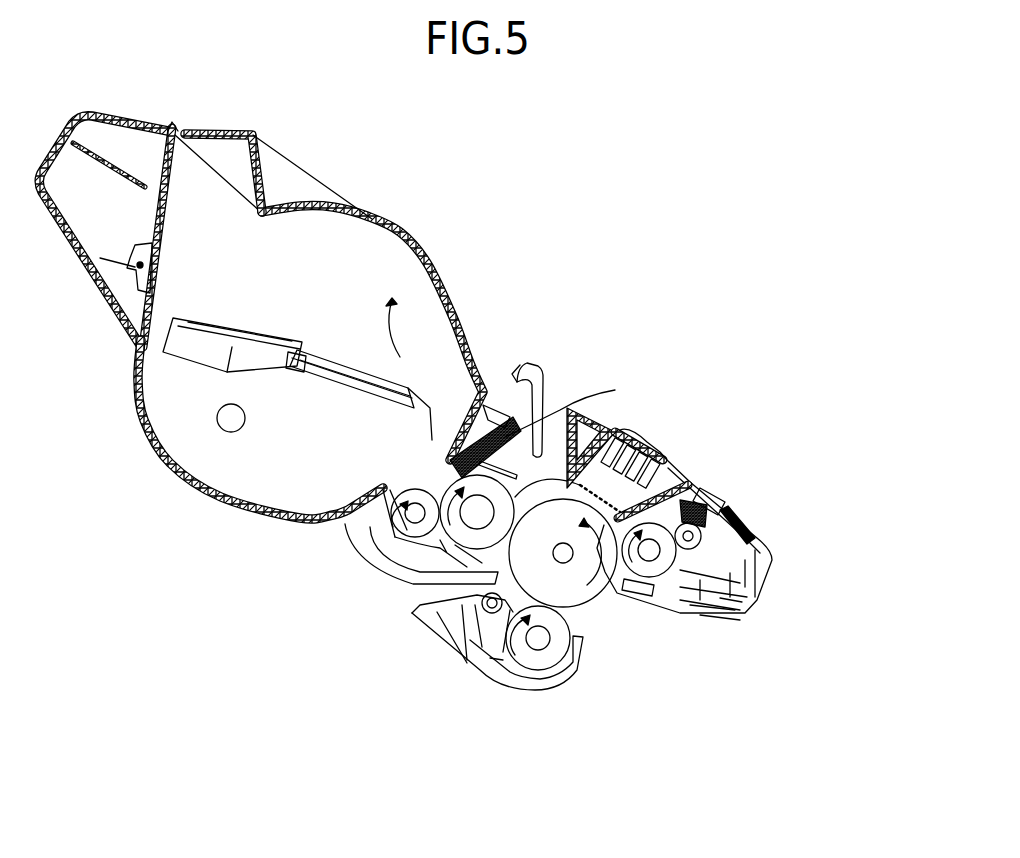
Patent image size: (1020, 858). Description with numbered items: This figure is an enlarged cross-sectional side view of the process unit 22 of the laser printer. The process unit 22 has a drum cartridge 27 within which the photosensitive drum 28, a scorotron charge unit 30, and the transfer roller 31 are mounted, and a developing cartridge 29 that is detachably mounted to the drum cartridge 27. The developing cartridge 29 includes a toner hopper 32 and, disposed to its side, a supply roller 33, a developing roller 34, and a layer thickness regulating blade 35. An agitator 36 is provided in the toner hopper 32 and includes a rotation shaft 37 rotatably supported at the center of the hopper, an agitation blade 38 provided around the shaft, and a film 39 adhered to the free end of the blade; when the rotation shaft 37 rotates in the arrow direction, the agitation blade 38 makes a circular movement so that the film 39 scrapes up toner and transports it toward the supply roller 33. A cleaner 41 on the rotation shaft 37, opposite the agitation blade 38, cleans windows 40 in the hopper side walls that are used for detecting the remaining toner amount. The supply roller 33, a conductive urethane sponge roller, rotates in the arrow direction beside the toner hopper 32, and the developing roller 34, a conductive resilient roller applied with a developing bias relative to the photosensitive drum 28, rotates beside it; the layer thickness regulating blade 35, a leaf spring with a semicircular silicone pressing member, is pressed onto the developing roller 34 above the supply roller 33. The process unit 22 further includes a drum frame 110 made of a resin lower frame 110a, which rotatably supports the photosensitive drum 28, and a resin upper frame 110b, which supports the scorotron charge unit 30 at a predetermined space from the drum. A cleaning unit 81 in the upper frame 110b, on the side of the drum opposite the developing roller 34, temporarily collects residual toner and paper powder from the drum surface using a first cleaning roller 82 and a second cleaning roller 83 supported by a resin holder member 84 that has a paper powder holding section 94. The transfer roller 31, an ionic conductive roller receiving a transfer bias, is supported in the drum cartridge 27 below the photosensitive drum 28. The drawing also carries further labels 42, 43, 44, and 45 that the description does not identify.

The process unit 22 is at (262, 717).
The drum cartridge 27 is at (774, 598).
The photosensitive drum 28 is at (605, 602).
The developing cartridge 29 is at (440, 260).
The scorotron charge unit 30 is at (667, 467).
The transfer roller 31 is at (490, 665).
The toner hopper 32 is at (290, 205).
The supply roller 33 is at (347, 537).
The developing roller 34 is at (593, 408).
The layer thickness regulating blade 35 is at (478, 460).
The agitator 36 is at (348, 362).
The rotation shaft 37 is at (285, 366).
The agitation blade 38 is at (300, 372).
The film 39 is at (405, 416).
The cleaning windows 40 is at (236, 432).
The cleaner 41 is at (182, 364).
The seal member 42 is at (432, 440).
The supply roller 43 is at (408, 480).
The sealing member 44 is at (448, 398).
The guide member 45 is at (515, 495).
The cleaning unit 81 is at (659, 630).
The first cleaning roller 82 is at (680, 608).
The second cleaning roller 83 is at (767, 548).
The holder member 84 is at (703, 610).
The paper powder holding section 94 is at (727, 612).
The drum frame 110 is at (773, 548).
The lower frame 110a is at (720, 617).
The upper frame 110b is at (690, 462).